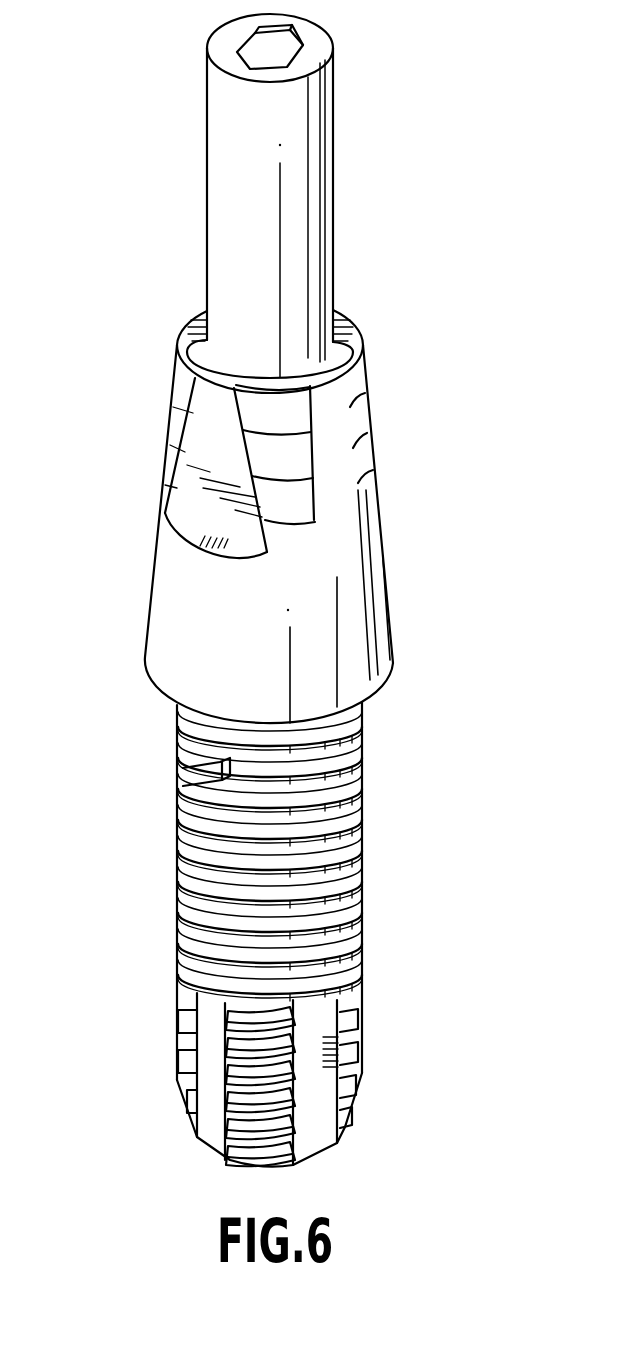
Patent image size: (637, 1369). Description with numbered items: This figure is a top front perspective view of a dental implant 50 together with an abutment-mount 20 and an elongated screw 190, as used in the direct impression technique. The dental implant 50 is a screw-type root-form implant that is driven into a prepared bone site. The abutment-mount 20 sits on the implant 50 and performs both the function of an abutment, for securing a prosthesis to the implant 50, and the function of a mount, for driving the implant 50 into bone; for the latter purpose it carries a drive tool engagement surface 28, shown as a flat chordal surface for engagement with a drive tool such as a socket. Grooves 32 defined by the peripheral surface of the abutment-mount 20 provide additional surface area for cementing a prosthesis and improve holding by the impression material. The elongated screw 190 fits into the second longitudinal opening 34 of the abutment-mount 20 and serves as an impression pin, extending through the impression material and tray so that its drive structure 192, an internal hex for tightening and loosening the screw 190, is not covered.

The drive structure 192 is at (280, 48).
The elongated screw 190 is at (313, 238).
The second longitudinal opening 34 is at (348, 318).
The grooves 32 is at (363, 385).
The abutment-mount 20 is at (383, 537).
The drive tool engagement surface 28 is at (180, 503).
The dental implant 50 is at (363, 862).